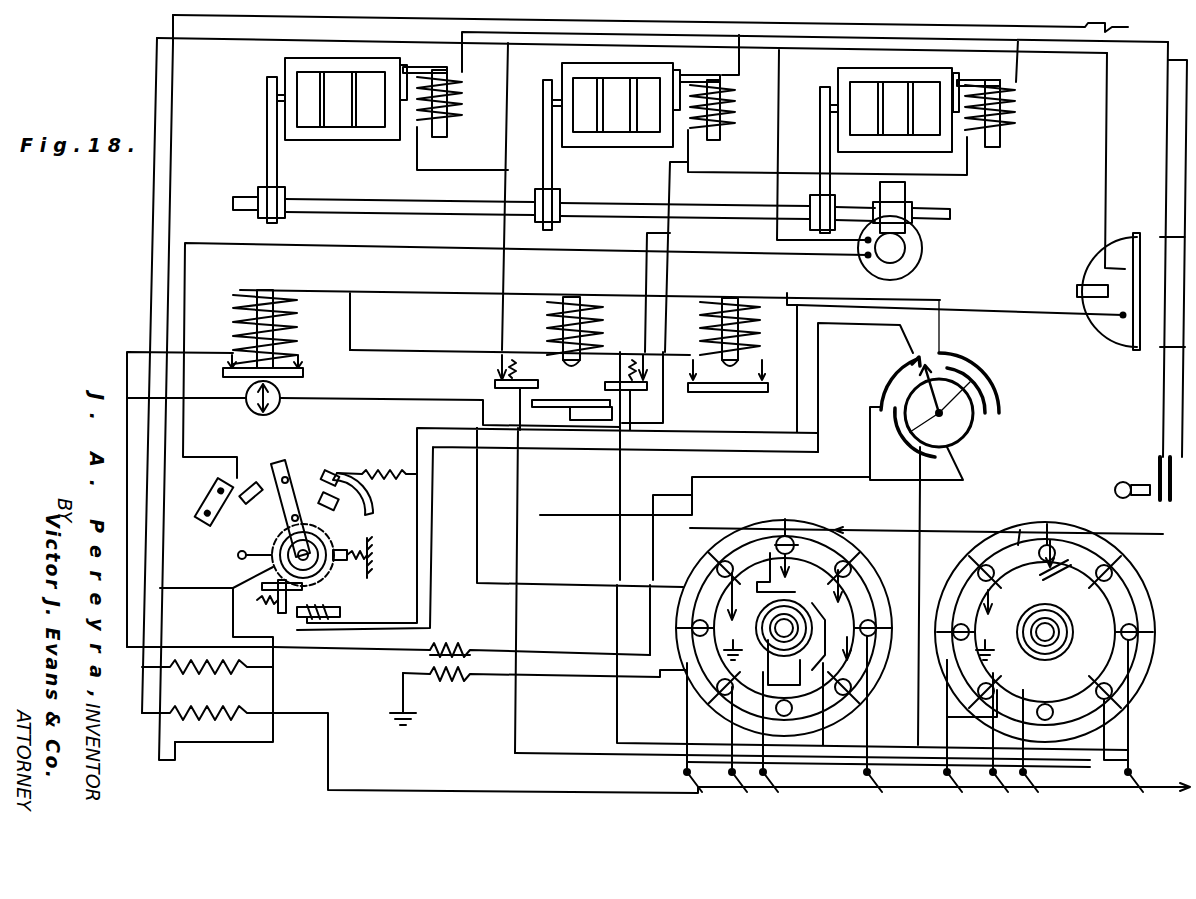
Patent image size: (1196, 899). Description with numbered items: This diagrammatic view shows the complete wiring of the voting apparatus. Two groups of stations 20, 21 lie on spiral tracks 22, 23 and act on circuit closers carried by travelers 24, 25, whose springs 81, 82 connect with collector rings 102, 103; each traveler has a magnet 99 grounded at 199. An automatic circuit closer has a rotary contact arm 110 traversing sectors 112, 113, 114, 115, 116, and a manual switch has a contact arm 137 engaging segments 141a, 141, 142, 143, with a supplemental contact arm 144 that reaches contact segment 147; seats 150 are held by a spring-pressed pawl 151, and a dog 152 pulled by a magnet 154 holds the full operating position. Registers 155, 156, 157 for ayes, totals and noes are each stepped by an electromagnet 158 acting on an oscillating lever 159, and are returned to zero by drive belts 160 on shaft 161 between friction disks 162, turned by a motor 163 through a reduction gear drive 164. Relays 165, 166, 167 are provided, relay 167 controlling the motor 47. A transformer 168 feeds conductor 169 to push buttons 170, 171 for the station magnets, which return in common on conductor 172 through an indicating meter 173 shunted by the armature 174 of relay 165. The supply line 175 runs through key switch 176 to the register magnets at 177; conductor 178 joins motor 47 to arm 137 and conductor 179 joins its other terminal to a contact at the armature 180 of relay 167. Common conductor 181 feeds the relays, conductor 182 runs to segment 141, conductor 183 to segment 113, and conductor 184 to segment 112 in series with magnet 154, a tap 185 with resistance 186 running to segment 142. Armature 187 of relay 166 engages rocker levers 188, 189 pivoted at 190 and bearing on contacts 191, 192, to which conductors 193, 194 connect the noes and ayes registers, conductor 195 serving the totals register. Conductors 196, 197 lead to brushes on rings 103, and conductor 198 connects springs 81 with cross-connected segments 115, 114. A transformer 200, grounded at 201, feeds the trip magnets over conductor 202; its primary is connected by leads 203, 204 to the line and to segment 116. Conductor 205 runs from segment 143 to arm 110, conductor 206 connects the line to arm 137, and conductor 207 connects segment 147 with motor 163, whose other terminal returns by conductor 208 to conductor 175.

The stations 20 is at (1062, 545).
The stations 21 is at (735, 545).
The spiral track 22 is at (1045, 630).
The spiral track 23 is at (866, 572).
The traveler 24 is at (1150, 553).
The traveler 25 is at (926, 518).
The motor 47 is at (1117, 337).
The spring of circuit closer 81 is at (1073, 592).
The spring of circuit closer 82 is at (789, 606).
The magnet 99 is at (782, 706).
The collector ring 102 is at (1075, 603).
The collector ring 103 is at (812, 607).
The rotary contact arm 110 is at (939, 373).
The sector 112 is at (972, 434).
The sector 113 is at (973, 375).
The sector 114 is at (990, 397).
The sector 115 is at (900, 435).
The sector 116 is at (898, 373).
The contact arm 137 is at (273, 541).
The segment 141 is at (272, 468).
The segment 141a is at (263, 505).
The segment 142 is at (383, 531).
The segment 143 is at (362, 495).
The supplemental contact arm 144 is at (275, 462).
The contact segment 147 is at (210, 527).
The seats 150 is at (320, 540).
The spring-pressed pawl 151 is at (369, 568).
The spring retracted dog 152 is at (278, 612).
The magnet 154 is at (330, 605).
The register 155 is at (348, 66).
The register 156 is at (625, 70).
The register 157 is at (905, 72).
The electromagnet 158 is at (465, 97).
The oscillating lever 159 is at (418, 66).
The drive belt 160 is at (268, 143).
The shaft 161 is at (598, 202).
The friction disks 162 is at (560, 222).
The motor 163 is at (925, 250).
The reduction gear drive 164 is at (897, 192).
The relay 165 is at (295, 300).
The relay 166 is at (566, 297).
The relay 167 is at (745, 300).
The transformer 168 is at (240, 688).
The conductor 169 is at (602, 793).
The push buttons 170 is at (783, 778).
The push buttons 171 is at (1050, 787).
The conductor 172 is at (127, 522).
The indicating meter 173 is at (278, 410).
The armature 174 is at (236, 378).
The supply line 175 is at (150, 232).
The key switch 176 is at (1172, 497).
The conductor 177 is at (671, 28).
The conductor 178 is at (173, 170).
The conductor 179 is at (994, 312).
The armature 180 is at (728, 395).
The common conductor 181 is at (440, 350).
The conductor 182 is at (355, 320).
The conductor 183 is at (680, 293).
The conductor 184 is at (757, 427).
The tap 185 is at (355, 470).
The resistance 186 is at (377, 465).
The armature 187 is at (550, 407).
The rocker lever 188 is at (534, 365).
The rocker lever 189 is at (611, 366).
The pivot 190 is at (520, 390).
The contact 191 is at (495, 378).
The contact 192 is at (672, 395).
The conductor 193 is at (732, 174).
The conductor 194 is at (448, 170).
The conductor 195 is at (672, 238).
The conductor 196 is at (624, 470).
The conductor 197 is at (557, 590).
The conductor 198 is at (921, 568).
The ground 199 is at (751, 654).
The transformer 200 is at (472, 655).
The ground 201 is at (415, 722).
The conductor 202 is at (568, 680).
The lead 203 is at (372, 668).
The lead 204 is at (570, 655).
The conductor 205 is at (564, 515).
The conductor 206 is at (230, 618).
The conductor 207 is at (190, 285).
The conductor 208 is at (783, 113).